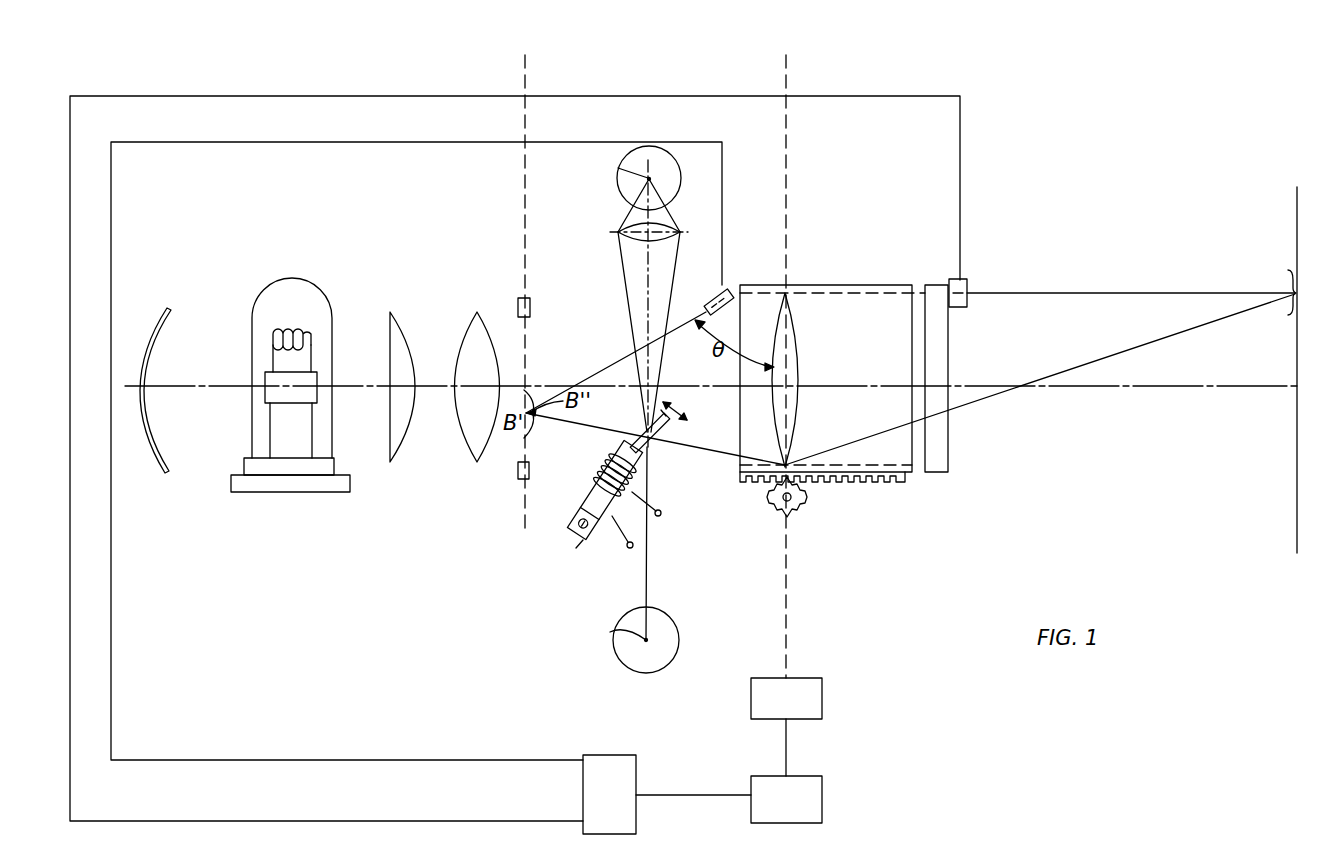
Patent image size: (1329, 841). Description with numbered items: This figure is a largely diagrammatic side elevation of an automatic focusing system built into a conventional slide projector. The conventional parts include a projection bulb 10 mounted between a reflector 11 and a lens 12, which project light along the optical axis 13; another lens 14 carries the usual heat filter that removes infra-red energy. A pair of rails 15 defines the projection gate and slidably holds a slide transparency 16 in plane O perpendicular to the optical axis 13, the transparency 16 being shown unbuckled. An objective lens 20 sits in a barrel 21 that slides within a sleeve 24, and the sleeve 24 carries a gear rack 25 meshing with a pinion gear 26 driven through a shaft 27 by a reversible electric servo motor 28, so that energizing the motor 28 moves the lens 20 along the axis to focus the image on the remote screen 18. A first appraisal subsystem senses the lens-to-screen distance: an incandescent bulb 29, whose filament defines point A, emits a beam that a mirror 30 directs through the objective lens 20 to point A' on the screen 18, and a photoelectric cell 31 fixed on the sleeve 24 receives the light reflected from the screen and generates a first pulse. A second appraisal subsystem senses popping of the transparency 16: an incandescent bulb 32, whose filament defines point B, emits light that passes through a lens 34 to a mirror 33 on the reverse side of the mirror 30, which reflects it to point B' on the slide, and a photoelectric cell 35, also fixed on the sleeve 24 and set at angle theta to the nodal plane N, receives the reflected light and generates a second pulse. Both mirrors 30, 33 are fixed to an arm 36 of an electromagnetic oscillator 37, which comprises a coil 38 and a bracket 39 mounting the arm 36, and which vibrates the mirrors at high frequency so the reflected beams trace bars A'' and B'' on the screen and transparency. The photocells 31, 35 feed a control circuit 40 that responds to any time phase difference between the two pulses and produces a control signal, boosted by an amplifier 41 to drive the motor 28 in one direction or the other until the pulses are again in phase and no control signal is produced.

The projection bulb 10 is at (299, 280).
The reflector 11 is at (163, 307).
The lens 12 is at (403, 327).
The optical axis 13 is at (1215, 386).
The lens 14 is at (473, 326).
The rails 15 is at (530, 298).
The slide transparency 16 is at (527, 347).
The screen 18 is at (1295, 228).
The objective lens 20 is at (774, 367).
The barrel 21 is at (932, 285).
The sleeve 24 is at (862, 285).
The gear rack 25 is at (868, 483).
The pinion gear 26 is at (798, 512).
The shaft 27 is at (788, 588).
The reversible electric servo motor 28 is at (786, 727).
The incandescent bulb 29 is at (668, 612).
The mirror 30 is at (665, 431).
The photoelectric cell 31 is at (962, 280).
The incandescent bulb 32 is at (618, 181).
The mirror 33 is at (665, 412).
The lens 34 is at (620, 232).
The photoelectric cell 35 is at (722, 290).
The arm 36 is at (595, 490).
The electromagnetic oscillator 37 is at (578, 550).
The coil 38 is at (628, 520).
The bracket 39 is at (568, 530).
The control circuit 40 is at (609, 794).
The amplifier 41 is at (729, 799).